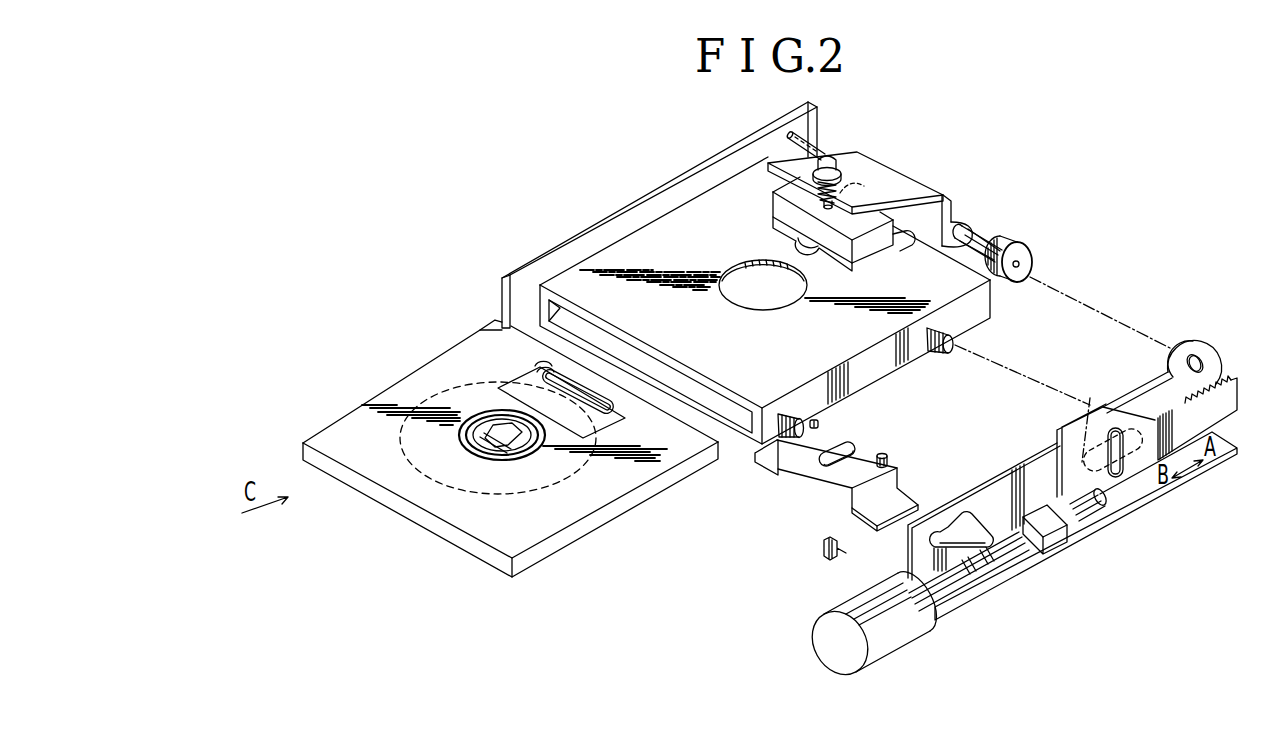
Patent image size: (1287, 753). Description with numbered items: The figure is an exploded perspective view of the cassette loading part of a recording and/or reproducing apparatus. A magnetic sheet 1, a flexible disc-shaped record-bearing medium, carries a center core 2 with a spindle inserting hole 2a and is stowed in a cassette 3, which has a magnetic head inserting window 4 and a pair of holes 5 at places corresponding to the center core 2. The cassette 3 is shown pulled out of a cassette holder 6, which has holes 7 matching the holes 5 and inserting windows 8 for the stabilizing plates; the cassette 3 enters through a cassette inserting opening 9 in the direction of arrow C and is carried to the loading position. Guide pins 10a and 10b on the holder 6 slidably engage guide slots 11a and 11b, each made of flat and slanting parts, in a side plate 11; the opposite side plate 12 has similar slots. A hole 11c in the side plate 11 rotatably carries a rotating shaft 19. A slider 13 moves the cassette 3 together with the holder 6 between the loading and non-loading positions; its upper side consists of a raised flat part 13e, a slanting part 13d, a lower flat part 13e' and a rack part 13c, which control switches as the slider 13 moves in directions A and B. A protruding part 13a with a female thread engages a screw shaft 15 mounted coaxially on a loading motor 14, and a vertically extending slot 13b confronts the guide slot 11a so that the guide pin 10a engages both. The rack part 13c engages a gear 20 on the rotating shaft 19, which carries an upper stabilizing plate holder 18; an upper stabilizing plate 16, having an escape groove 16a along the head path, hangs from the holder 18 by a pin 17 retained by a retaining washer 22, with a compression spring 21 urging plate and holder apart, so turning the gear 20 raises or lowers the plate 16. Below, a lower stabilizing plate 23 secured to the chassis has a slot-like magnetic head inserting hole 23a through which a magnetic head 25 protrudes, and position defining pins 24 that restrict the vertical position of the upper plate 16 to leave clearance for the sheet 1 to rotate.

The magnetic sheet 1 is at (562, 422).
The center core 2 is at (466, 432).
The spindle inserting hole 2a is at (500, 430).
The cassette 3 is at (552, 549).
The magnetic head inserting window 4 is at (540, 373).
The holes 5 is at (505, 460).
The cassette holder 6 is at (614, 246).
The holes 7 is at (736, 272).
The inserting windows 8 is at (782, 232).
The cassette inserting opening 9 is at (746, 422).
The guide pin 10a is at (954, 343).
The guide pin 10b is at (788, 413).
The side plate 11 is at (987, 497).
The guide slot 11a is at (1106, 435).
The guide slot 11b is at (948, 520).
The hole 11c is at (1192, 355).
The side plate 12 is at (540, 260).
The slider 13 is at (1147, 462).
The protruding part 13a is at (1055, 540).
The vertically extending slot 13b is at (1112, 482).
The rack part 13c is at (1216, 373).
The slanting part 13d is at (1140, 413).
The raised flat part 13e is at (1134, 388).
The lower flat part 13e' is at (1229, 430).
The loading motor 14 is at (900, 645).
The screw shaft 15 is at (1005, 560).
The upper stabilizing plate 16 is at (870, 247).
The escape groove 16a is at (811, 242).
The pin 17 is at (829, 157).
The upper stabilizing plate holder 18 is at (913, 186).
The rotating shaft 19 is at (986, 240).
The gear 20 is at (1024, 254).
The compression spring 21 is at (865, 185).
The retaining washer 22 is at (800, 141).
The lower stabilizing plate 23 is at (843, 470).
The magnetic head inserting hole 23a is at (820, 463).
The position defining pins 24 is at (882, 453).
The magnetic head 25 is at (822, 550).